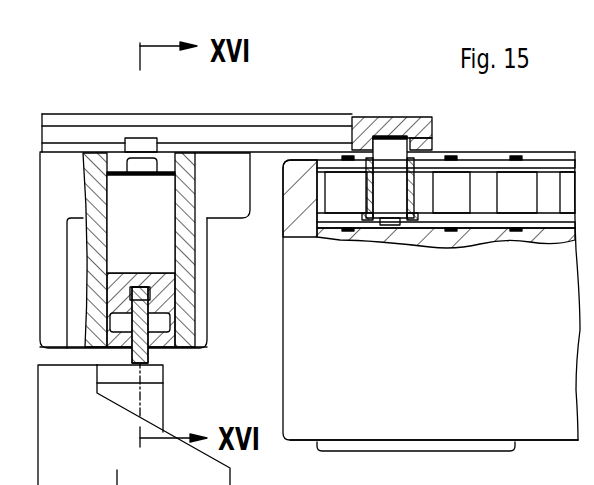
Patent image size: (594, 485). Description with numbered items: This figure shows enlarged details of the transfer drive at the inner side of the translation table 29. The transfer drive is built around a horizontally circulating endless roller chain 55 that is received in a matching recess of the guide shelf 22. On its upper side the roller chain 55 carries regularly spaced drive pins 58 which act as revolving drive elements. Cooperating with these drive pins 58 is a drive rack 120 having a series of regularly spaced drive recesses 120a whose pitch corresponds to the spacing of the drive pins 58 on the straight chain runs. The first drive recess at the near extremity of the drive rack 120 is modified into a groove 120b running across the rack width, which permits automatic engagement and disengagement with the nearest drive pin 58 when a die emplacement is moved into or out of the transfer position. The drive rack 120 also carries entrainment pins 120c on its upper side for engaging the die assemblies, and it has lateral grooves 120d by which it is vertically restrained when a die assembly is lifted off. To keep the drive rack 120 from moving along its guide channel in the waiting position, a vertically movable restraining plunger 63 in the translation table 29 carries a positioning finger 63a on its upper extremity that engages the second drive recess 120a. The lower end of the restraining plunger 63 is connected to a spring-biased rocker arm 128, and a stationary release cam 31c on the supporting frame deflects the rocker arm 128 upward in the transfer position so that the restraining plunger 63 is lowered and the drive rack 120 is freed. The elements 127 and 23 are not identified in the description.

The lateral groove 120d is at (78, 135).
The drive recess 120a is at (150, 143).
The positioning finger 63a is at (140, 165).
The drive rack 120 is at (403, 103).
The groove 120b is at (432, 140).
The drive pin 58 is at (390, 148).
The guide shelf 22 is at (553, 402).
The entrainment pin 120c is at (416, 463).
The housing base 127 is at (434, 462).
The endless roller chain 55 is at (517, 193).
The translation table 29 is at (183, 275).
The restraining plunger 63 is at (150, 235).
The rocker arm 128 is at (150, 352).
The release cam 31c is at (142, 398).
The base plate 23 is at (157, 425).